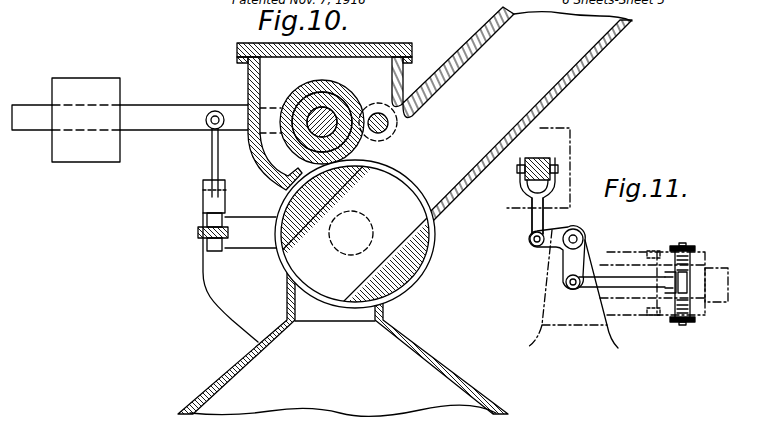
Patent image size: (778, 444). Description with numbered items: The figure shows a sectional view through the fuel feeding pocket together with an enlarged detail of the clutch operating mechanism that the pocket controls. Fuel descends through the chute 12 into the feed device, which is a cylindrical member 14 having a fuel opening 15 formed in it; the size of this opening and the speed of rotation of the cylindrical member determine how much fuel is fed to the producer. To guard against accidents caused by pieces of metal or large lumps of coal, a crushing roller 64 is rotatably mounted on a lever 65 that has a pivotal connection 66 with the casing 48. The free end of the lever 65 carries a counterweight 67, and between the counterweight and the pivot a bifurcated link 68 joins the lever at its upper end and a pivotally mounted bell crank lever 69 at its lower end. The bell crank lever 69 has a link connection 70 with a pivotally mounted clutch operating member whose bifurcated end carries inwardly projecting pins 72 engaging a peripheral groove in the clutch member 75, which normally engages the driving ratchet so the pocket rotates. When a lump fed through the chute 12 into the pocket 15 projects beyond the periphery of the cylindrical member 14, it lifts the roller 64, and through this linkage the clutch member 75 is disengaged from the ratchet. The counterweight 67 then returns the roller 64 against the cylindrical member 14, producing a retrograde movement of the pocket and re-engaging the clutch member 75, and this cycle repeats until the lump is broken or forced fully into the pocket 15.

In FIG. 10, the chute 12 is at (512, 114).
In FIG. 10, the cylindrical member 14 is at (417, 245).
In FIG. 10, the fuel opening 15 is at (355, 234).
In FIG. 10, the casing 48 is at (421, 353).
In FIG. 10, the crushing roller 64 is at (343, 111).
In FIG. 10, the lever 65 is at (170, 113).
In FIG. 11, the lever 65 is at (552, 158).
In FIG. 10, the pivotal connection 66 is at (390, 125).
In FIG. 10, the counterweight 67 is at (86, 120).
In FIG. 10, the bifurcated link 68 is at (212, 160).
In FIG. 11, the bifurcated link 68 is at (533, 218).
In FIG. 10, the bell crank lever 69 is at (207, 203).
In FIG. 11, the bell crank lever 69 is at (565, 258).
In FIG. 10, the link connection 70 is at (198, 231).
In FIG. 11, the link connection 70 is at (612, 283).
In FIG. 11, the pins 72 is at (683, 246).
In FIG. 11, the clutch member 75 is at (702, 259).